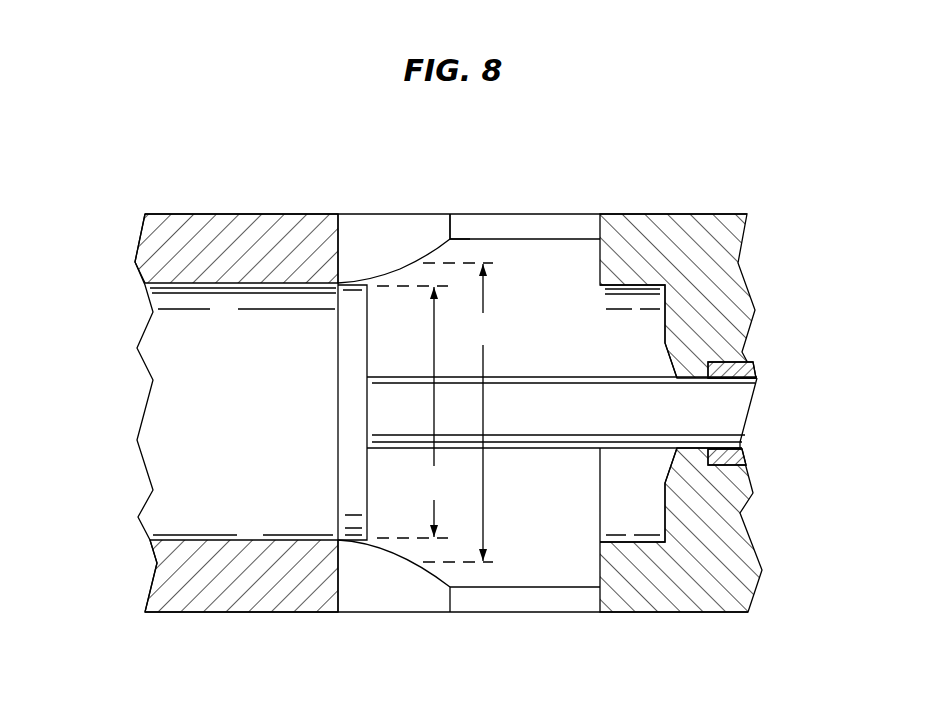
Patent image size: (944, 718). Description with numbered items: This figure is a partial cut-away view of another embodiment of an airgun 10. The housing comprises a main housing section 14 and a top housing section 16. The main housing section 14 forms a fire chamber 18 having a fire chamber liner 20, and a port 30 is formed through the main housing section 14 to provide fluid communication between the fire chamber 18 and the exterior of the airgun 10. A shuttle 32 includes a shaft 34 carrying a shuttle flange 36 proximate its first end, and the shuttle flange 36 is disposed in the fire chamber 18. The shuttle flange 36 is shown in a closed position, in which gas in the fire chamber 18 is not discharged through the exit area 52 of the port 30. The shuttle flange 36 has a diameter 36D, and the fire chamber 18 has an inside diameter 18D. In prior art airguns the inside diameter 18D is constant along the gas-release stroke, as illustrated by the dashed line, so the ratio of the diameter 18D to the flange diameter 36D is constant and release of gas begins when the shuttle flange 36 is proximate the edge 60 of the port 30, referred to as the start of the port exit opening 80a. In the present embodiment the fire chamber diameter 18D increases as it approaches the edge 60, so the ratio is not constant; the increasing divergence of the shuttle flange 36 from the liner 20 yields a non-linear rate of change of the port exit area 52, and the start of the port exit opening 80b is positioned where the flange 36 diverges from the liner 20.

The airgun 10 is at (625, 178).
The main housing section 14 is at (248, 212).
The top housing section 16 is at (687, 213).
The fire chamber 18 is at (228, 422).
The fire chamber liner 20 is at (253, 538).
The port 30 is at (562, 205).
The shuttle 32 is at (527, 462).
The shaft 34 is at (548, 422).
The shuttle flange 36 is at (347, 360).
The port exit area 52 is at (443, 553).
The edge of port 60 is at (452, 220).
The start of port exit opening 80a is at (450, 277).
The start of port exit opening 80b is at (390, 275).
The fire chamber inside diameter 18D is at (464, 412).
The shuttle flange diameter 36D is at (416, 412).